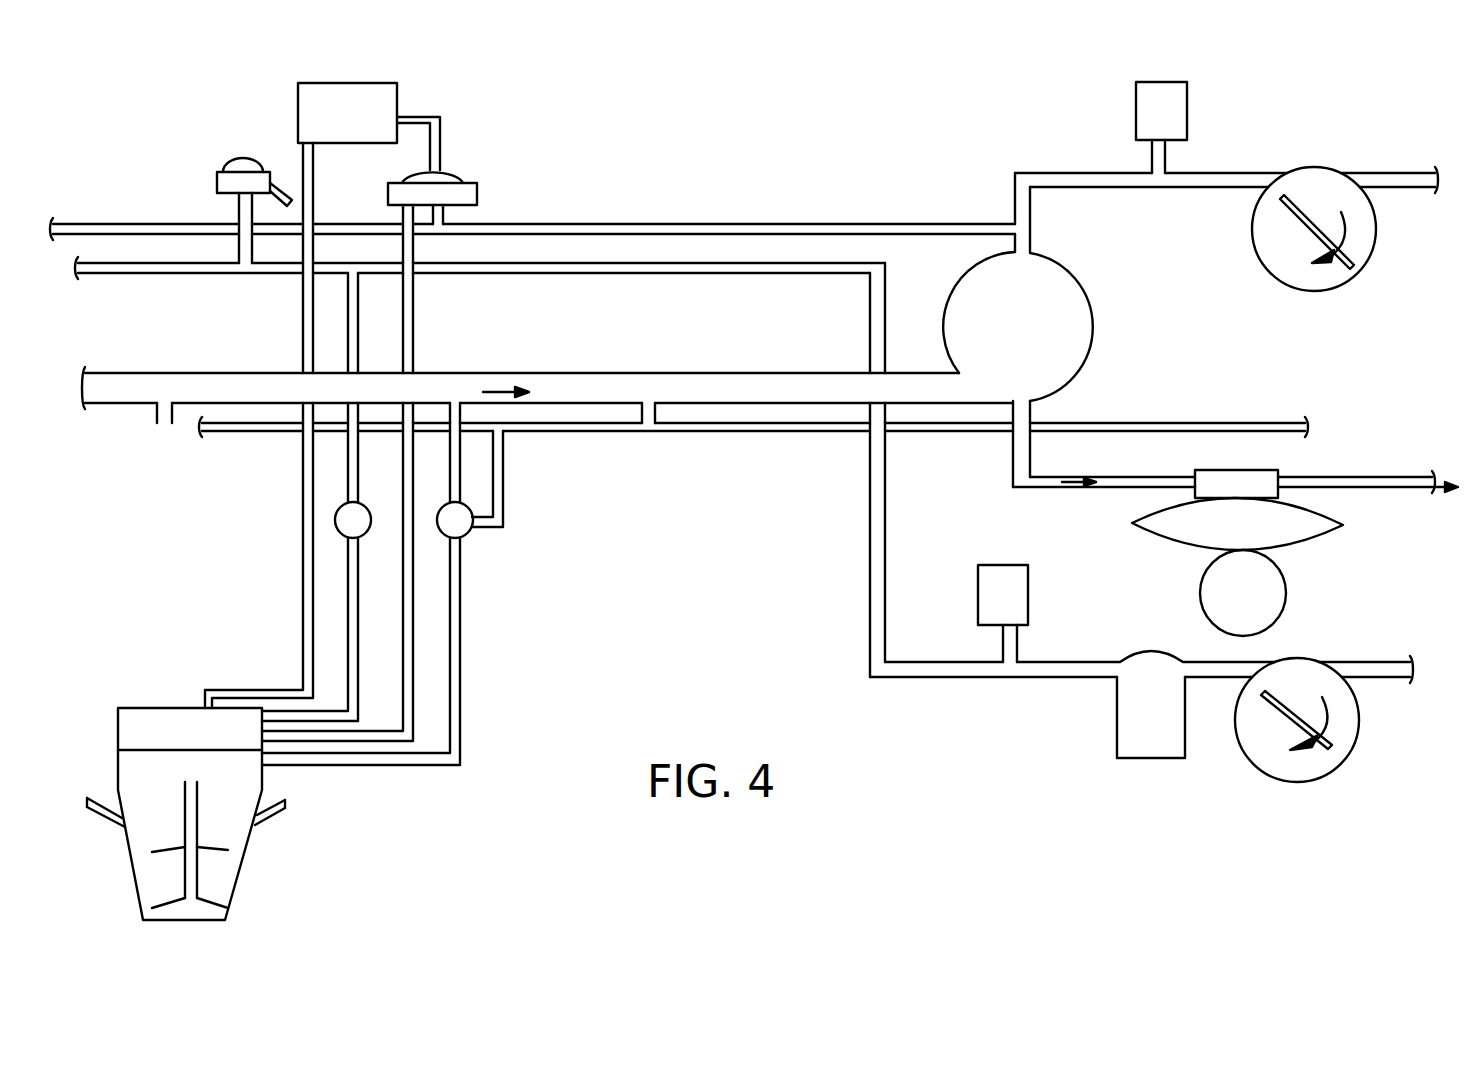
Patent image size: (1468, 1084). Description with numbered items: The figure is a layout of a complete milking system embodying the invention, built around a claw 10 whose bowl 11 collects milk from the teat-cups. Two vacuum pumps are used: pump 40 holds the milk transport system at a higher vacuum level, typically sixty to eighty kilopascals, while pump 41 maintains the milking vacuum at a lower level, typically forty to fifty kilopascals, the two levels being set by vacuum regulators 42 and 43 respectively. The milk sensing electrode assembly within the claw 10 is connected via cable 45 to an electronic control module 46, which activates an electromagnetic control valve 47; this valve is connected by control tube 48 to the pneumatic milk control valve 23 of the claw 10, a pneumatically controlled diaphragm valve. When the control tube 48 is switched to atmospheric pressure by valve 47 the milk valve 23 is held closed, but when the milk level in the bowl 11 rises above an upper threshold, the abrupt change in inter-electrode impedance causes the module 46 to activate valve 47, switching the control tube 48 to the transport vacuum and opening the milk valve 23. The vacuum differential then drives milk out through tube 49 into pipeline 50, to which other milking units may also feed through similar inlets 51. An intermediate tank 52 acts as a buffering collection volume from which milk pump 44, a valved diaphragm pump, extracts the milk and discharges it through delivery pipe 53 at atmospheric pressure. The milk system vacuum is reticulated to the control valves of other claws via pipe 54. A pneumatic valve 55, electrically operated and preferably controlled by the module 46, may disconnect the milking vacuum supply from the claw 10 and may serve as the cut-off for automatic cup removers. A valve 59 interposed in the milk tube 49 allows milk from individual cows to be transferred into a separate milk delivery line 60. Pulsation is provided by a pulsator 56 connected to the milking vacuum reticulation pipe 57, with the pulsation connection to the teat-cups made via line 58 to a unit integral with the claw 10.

The claw 10 is at (180, 816).
The bowl 11 is at (227, 877).
The milk valve 23 is at (128, 730).
The vacuum pump 40 is at (1337, 276).
The vacuum pump 41 is at (1278, 768).
The vacuum regulator 42 is at (1180, 103).
The vacuum regulator 43 is at (1025, 582).
The milk pump 44 is at (1310, 554).
The cable 45 is at (302, 305).
The electronic control module 46 is at (386, 98).
The electromagnetic control valve 47 is at (465, 192).
The control tube 48 is at (412, 313).
The milk tube 49 is at (460, 640).
The pipeline 50 is at (607, 381).
The inlets 51 is at (452, 401).
The intermediate tank 52 is at (1075, 300).
The delivery pipe 53 is at (1332, 480).
The pipe 54 is at (727, 224).
The pneumatic valve 55 is at (325, 518).
The pulsator 56 is at (240, 158).
The milking vacuum reticulation pipe 57 is at (737, 274).
The line 58 is at (348, 628).
The valve 59 is at (482, 540).
The milk delivery line 60 is at (775, 433).